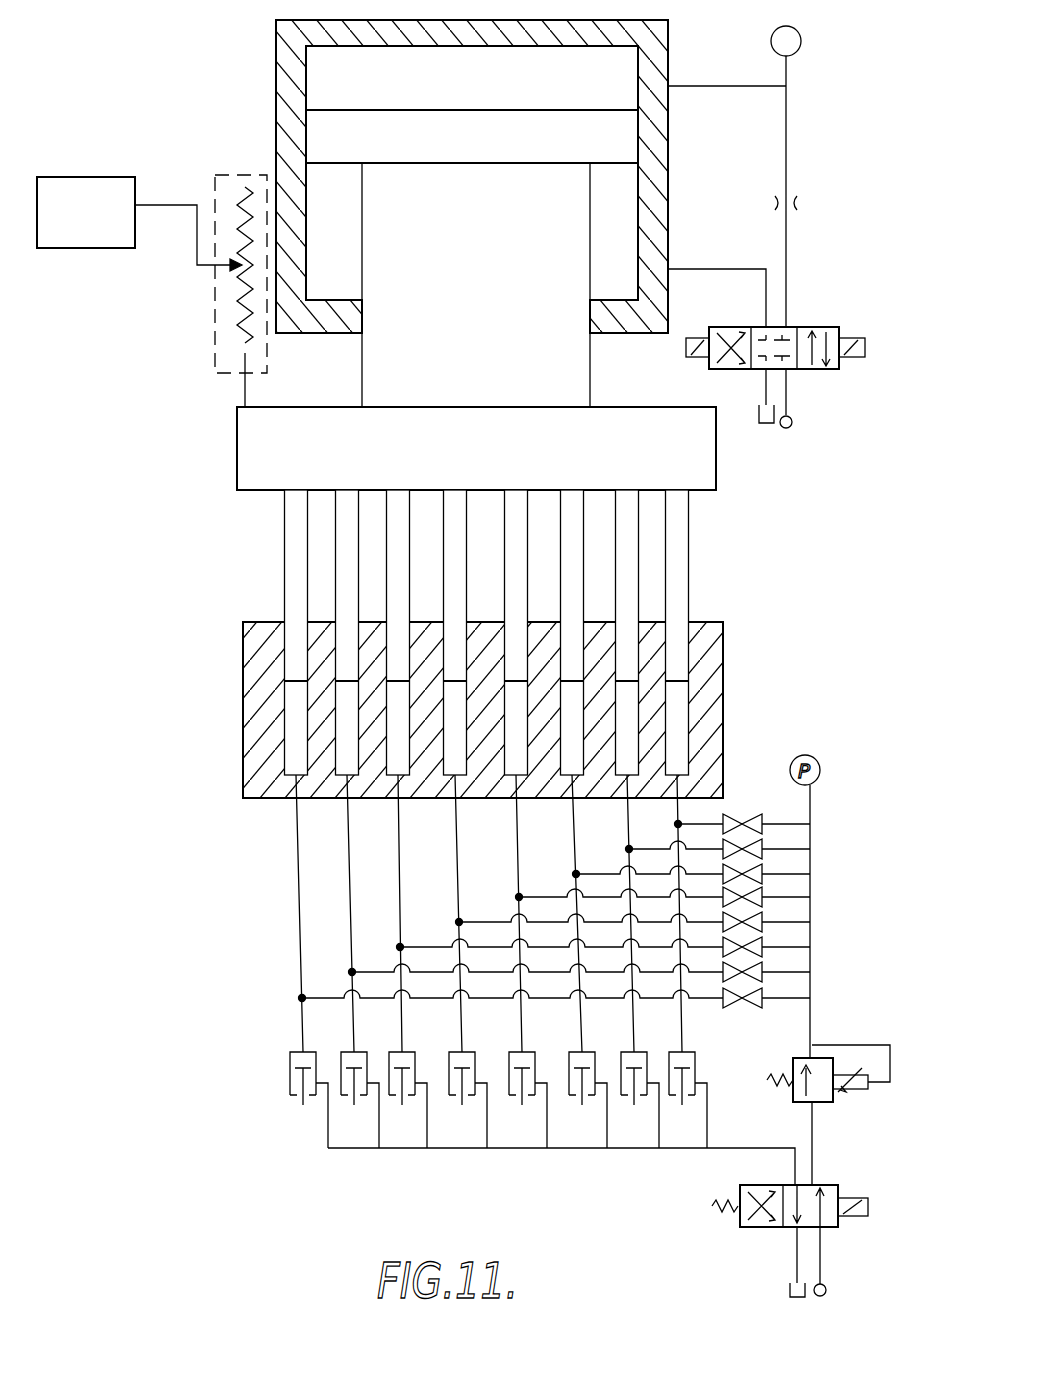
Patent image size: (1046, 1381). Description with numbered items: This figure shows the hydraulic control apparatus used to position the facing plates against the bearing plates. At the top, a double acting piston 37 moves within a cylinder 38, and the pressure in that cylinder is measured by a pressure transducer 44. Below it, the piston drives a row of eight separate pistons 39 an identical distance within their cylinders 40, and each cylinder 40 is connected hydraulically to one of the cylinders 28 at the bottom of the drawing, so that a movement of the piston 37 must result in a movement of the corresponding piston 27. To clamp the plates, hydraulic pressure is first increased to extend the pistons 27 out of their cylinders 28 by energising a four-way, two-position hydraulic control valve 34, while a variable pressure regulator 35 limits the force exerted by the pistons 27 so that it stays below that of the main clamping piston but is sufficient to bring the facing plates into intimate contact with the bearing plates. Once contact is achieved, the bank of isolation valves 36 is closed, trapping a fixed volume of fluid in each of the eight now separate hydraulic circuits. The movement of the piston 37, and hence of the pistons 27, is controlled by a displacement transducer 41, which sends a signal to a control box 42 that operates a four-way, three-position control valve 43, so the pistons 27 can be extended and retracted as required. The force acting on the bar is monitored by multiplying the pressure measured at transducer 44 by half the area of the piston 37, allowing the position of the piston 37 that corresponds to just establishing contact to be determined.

The piston 27 is at (295, 1087).
The cylinder 28 is at (290, 1072).
The four-way, two-position hydraulic control valve 34 is at (770, 1230).
The variable pressure regulator 35 is at (845, 1095).
The bank of isolation valves 36 is at (746, 820).
The double acting piston 37 is at (330, 140).
The cylinder 38 is at (330, 75).
The piston 39 is at (292, 672).
The cylinder 40 is at (293, 752).
The displacement transducer 41 is at (222, 356).
The control box 42 is at (103, 222).
The four-way, three-position control valve 43 is at (812, 370).
The pressure transducer 44 is at (800, 50).